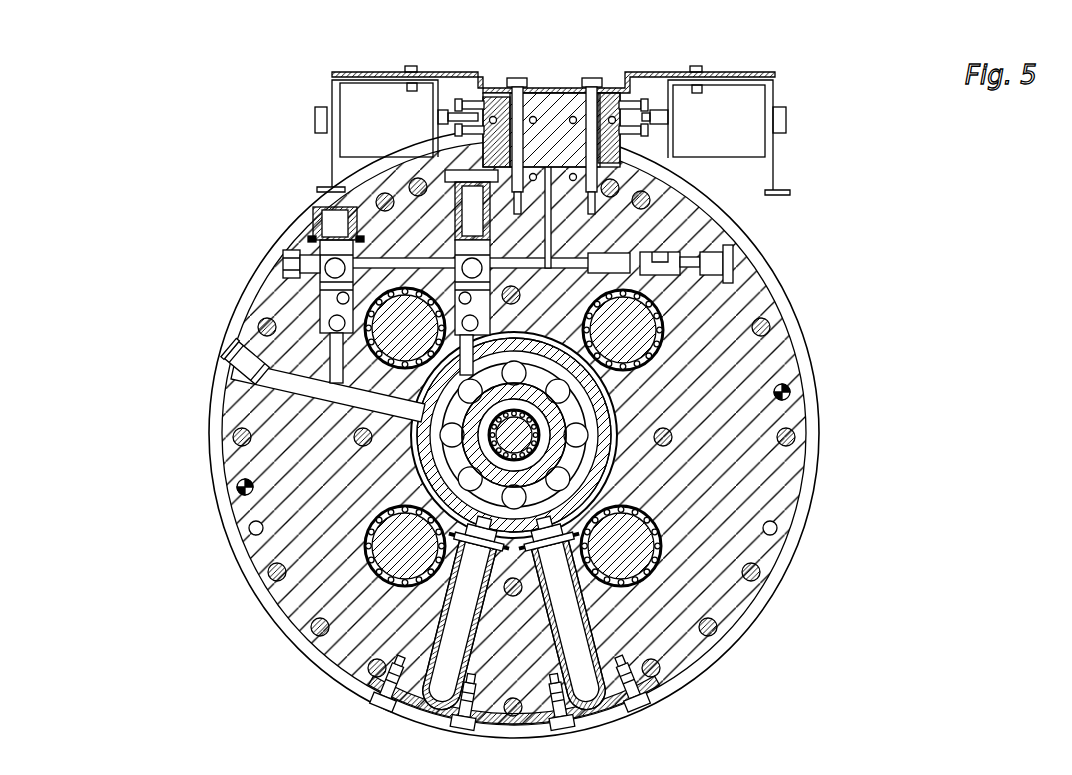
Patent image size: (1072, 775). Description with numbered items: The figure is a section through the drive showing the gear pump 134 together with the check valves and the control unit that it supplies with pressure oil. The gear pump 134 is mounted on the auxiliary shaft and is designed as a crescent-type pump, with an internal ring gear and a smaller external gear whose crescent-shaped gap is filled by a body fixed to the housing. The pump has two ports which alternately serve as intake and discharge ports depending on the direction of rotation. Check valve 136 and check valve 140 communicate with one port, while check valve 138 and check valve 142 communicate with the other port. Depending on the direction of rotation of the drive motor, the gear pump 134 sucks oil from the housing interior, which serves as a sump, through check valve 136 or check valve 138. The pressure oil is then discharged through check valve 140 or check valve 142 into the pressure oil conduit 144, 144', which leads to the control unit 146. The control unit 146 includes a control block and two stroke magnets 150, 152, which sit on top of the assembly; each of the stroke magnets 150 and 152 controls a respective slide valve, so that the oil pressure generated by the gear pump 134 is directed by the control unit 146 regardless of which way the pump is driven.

The gear pump 134 is at (297, 302).
The check valve 136 is at (337, 323).
The check valve 138 is at (262, 381).
The check valve 140 is at (313, 265).
The check valve 142 is at (312, 234).
The pressure oil conduit 144 is at (516, 277).
The pressure oil conduit 144' is at (584, 204).
The control unit 146 is at (565, 84).
The stroke magnet 150 is at (406, 129).
The stroke magnet 152 is at (745, 129).